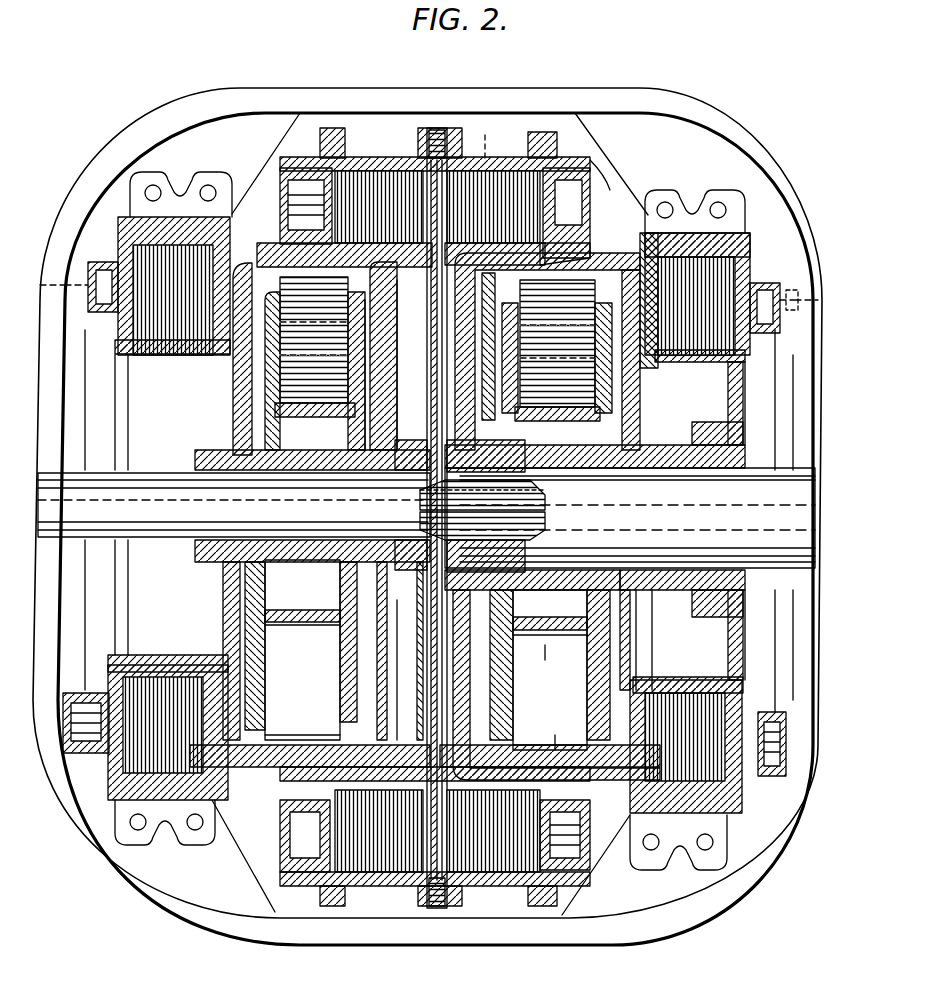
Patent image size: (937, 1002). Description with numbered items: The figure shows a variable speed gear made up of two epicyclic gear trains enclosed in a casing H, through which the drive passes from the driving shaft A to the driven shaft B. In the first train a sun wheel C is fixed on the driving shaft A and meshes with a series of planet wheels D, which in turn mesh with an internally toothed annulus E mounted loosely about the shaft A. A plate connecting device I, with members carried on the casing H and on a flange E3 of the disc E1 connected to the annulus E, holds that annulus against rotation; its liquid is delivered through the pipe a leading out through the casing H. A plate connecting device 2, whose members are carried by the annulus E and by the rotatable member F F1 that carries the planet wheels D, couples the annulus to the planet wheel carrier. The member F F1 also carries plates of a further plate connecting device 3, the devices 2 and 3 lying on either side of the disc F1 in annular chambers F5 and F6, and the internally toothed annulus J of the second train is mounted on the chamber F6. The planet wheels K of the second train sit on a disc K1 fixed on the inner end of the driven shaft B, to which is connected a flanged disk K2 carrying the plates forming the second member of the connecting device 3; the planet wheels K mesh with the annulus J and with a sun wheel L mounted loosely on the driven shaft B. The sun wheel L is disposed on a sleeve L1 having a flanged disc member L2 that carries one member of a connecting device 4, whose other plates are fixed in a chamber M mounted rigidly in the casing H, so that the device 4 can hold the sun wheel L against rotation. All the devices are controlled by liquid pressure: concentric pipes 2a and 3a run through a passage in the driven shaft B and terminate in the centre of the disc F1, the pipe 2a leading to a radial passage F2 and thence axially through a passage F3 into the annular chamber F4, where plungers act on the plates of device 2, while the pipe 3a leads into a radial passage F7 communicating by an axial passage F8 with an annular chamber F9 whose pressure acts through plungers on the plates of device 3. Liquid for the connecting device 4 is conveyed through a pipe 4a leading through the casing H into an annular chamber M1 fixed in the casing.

The casing H is at (252, 102).
The plate connecting device I is at (182, 217).
The pipe a is at (85, 280).
The chamber M is at (700, 245).
The connecting device 4 is at (728, 300).
The annular chamber M1 is at (765, 292).
The pipe 4a is at (792, 295).
The flange E3 is at (175, 665).
The disc E1 is at (235, 380).
The sleeve L1 is at (672, 455).
The flanged disc member L2 is at (735, 412).
The plate connecting device 2 is at (375, 160).
The plate connecting device 3 is at (516, 150).
The annular chamber F6 is at (570, 180).
The passage F8 is at (485, 135).
The annular chamber F9 is at (606, 170).
The annular chamber F5 is at (436, 128).
The planet wheels D is at (260, 385).
The radial passage F7 is at (385, 330).
The disc F1 is at (398, 380).
The rotatable member F is at (366, 390).
The planet wheels K is at (598, 262).
The driving shaft A is at (234, 505).
The driven shaft B is at (630, 518).
The pipe 2a is at (530, 500).
The pipe 3a is at (530, 530).
The sun wheel C is at (300, 625).
The internally toothed annulus E is at (303, 745).
The disc K1 is at (505, 698).
The sun wheel L is at (544, 661).
The internally toothed annulus J is at (549, 730).
The flanged disk K2 is at (470, 722).
The radial passage F2 is at (430, 686).
The passage F3 is at (372, 882).
The annular chamber F4 is at (296, 872).